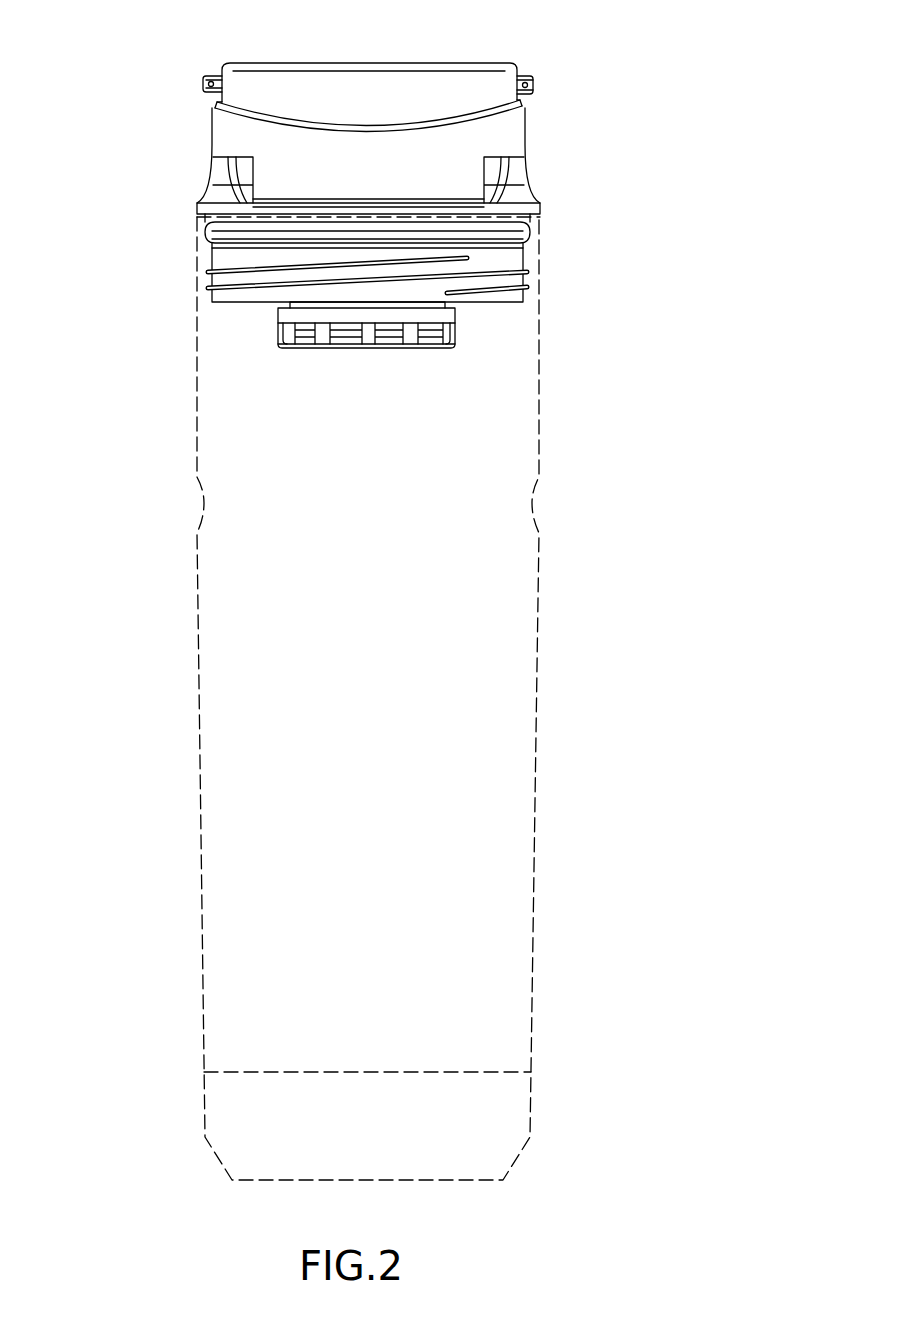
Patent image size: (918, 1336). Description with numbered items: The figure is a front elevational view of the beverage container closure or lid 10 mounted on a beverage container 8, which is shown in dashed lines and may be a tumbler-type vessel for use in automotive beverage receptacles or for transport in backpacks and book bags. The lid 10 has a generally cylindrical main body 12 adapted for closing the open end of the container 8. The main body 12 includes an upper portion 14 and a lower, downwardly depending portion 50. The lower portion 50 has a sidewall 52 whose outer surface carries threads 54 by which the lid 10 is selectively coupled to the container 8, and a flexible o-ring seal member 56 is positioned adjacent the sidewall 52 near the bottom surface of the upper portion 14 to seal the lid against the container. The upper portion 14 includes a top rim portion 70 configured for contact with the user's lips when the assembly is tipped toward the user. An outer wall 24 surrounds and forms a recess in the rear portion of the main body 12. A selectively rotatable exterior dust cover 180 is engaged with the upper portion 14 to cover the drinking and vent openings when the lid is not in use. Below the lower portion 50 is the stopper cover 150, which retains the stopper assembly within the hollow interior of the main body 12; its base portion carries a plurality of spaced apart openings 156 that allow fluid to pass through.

The beverage container closure or lid 10 is at (642, 52).
The dust cover 180 is at (477, 63).
The top rim portion 70 is at (203, 82).
The upper portion 14 is at (548, 171).
The main body 12 is at (317, 193).
The outer wall 24 is at (535, 207).
The o-ring seal member 56 is at (528, 232).
The lower portion 50 is at (176, 277).
The sidewall 52 is at (503, 258).
The threads 54 is at (528, 288).
The stopper cover 150 is at (458, 320).
The openings 156 is at (427, 336).
The beverage container 8 is at (539, 577).